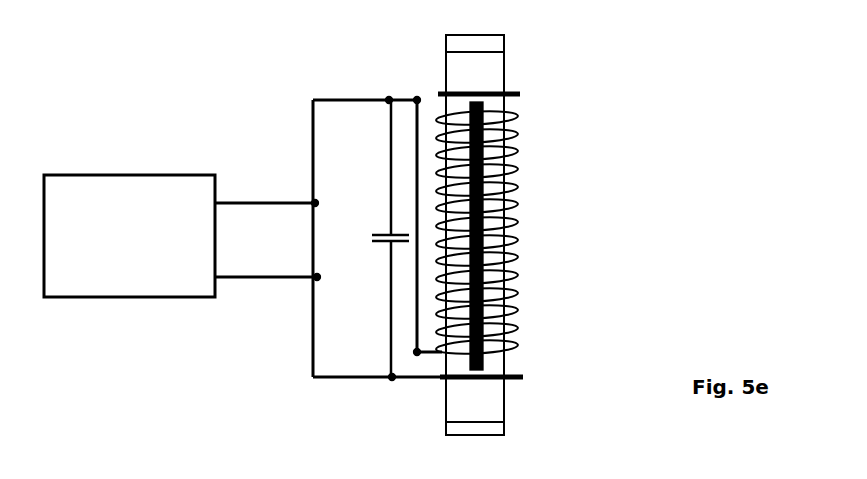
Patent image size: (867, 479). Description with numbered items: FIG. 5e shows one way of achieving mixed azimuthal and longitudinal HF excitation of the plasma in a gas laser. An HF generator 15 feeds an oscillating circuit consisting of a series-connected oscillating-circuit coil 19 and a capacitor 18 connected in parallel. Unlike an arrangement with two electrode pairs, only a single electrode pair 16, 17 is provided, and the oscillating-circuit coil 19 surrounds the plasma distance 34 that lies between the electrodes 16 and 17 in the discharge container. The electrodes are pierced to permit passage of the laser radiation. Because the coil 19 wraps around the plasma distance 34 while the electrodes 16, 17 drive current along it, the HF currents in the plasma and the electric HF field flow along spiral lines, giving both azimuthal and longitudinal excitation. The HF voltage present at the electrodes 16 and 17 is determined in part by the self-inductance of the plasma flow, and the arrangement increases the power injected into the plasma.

The HF generator 15 is at (150, 267).
The electrode 16 is at (519, 91).
The electrode 17 is at (510, 383).
The capacitor 18 is at (380, 241).
The oscillating-circuit coil 19 is at (519, 200).
The plasma distance 34 is at (492, 333).